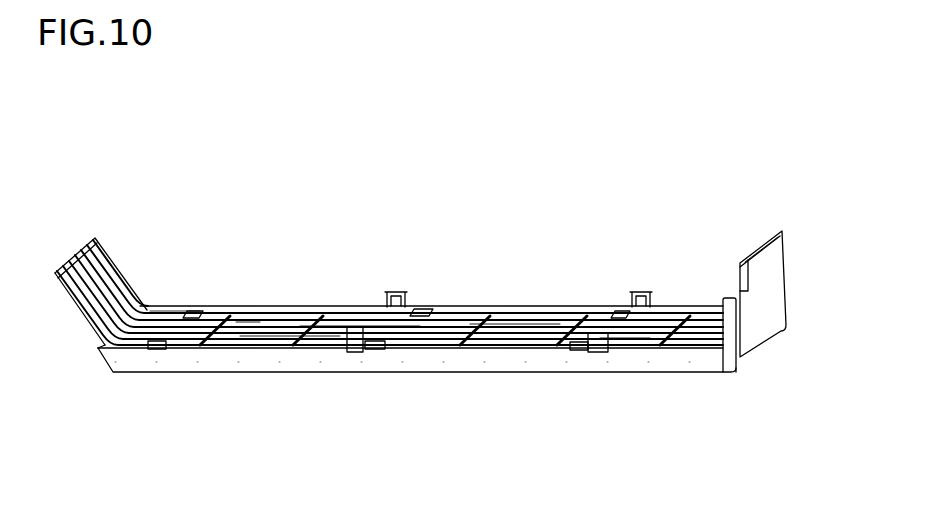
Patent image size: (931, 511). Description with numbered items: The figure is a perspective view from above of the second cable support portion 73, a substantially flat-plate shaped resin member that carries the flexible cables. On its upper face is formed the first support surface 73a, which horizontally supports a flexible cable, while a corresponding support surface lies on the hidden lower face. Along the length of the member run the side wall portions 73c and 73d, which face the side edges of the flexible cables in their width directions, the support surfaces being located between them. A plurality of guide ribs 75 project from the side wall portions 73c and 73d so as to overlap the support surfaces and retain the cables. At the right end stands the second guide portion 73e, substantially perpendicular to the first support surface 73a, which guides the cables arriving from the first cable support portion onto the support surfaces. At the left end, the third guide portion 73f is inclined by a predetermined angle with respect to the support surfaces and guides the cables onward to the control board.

The second cable support portion 73 is at (500, 258).
The first support surface 73a is at (162, 307).
The side wall portion 73c is at (291, 310).
The side wall portion 73d is at (240, 364).
The second guide portion 73e is at (758, 252).
The third guide portion 73f is at (77, 252).
The guide ribs 75 is at (192, 308).